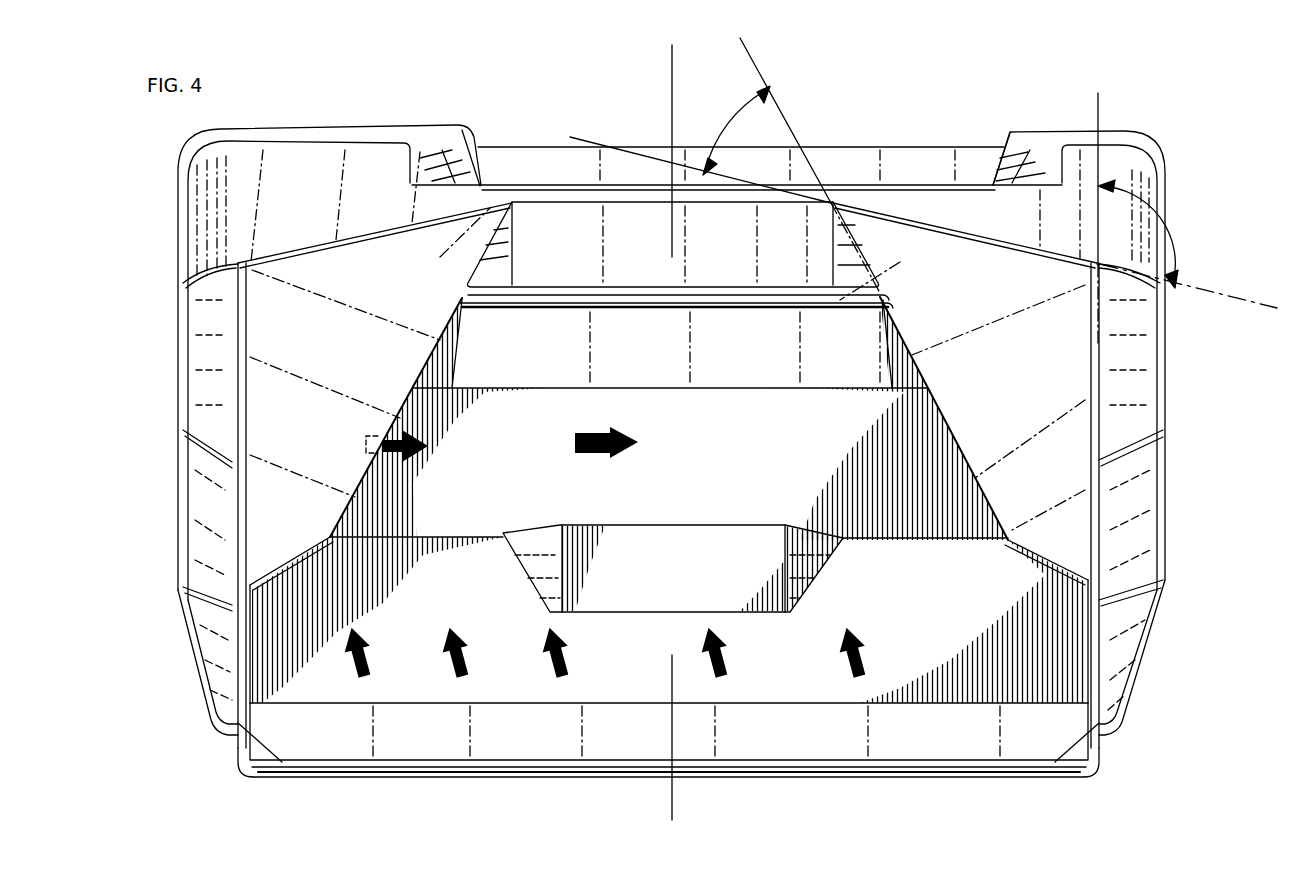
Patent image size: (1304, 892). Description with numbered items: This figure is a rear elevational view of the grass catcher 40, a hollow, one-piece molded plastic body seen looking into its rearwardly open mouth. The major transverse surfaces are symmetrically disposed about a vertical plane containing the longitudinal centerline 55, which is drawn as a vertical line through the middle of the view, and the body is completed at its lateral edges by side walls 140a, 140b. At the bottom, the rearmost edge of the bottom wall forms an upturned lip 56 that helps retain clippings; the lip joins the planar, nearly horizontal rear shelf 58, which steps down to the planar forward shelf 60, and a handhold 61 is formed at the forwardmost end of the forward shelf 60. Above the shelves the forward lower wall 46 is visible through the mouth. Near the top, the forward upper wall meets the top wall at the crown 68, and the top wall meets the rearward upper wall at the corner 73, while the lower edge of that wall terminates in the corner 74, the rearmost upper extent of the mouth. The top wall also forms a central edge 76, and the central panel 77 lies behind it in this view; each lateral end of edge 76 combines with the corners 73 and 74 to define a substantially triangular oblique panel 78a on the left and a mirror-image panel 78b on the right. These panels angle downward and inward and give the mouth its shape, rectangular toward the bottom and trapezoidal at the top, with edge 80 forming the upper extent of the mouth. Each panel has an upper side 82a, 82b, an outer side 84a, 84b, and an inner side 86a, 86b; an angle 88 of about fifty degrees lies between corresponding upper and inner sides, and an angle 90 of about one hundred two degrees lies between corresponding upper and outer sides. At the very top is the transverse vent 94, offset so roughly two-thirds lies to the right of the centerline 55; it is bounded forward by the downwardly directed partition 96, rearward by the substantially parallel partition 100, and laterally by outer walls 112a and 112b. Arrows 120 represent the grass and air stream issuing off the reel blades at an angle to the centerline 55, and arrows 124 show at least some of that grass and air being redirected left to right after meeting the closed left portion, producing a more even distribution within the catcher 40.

The catcher 40 is at (1167, 122).
The forward lower wall 46 is at (699, 450).
The longitudinal centerline 55 is at (672, 78).
The upturned lip 56 is at (868, 766).
The rear shelf 58 is at (643, 742).
The forward shelf 60 is at (652, 655).
The handhold 61 is at (680, 582).
The crown 68 is at (463, 127).
The corner 73 is at (239, 262).
The corner 74 is at (258, 582).
The edge 76 is at (585, 204).
The upper recess rear panel 77 is at (650, 233).
The left triangular panel 78a is at (322, 343).
The right triangular panel 78b is at (1014, 333).
The edge 80 is at (580, 302).
The upper side 82a is at (410, 229).
The upper side 82b is at (1040, 232).
The outer side 84a is at (240, 398).
The outer side 84b is at (1098, 392).
The inner side 86a is at (418, 385).
The inner side 86b is at (900, 340).
The angle 88 is at (742, 121).
The angle 90 is at (1177, 235).
The vent 94 is at (545, 142).
The partition 96 is at (861, 176).
The partition 100 is at (660, 334).
The wall 112a is at (447, 163).
The wall 112b is at (1010, 140).
The arrows 120 is at (868, 672).
The arrows 124 is at (633, 430).
The side wall 140a is at (176, 400).
The side wall 140b is at (1167, 383).